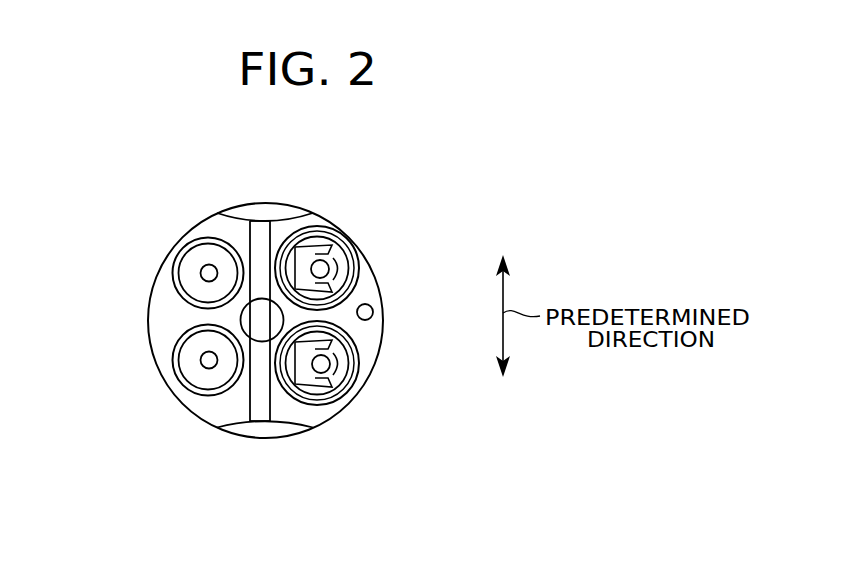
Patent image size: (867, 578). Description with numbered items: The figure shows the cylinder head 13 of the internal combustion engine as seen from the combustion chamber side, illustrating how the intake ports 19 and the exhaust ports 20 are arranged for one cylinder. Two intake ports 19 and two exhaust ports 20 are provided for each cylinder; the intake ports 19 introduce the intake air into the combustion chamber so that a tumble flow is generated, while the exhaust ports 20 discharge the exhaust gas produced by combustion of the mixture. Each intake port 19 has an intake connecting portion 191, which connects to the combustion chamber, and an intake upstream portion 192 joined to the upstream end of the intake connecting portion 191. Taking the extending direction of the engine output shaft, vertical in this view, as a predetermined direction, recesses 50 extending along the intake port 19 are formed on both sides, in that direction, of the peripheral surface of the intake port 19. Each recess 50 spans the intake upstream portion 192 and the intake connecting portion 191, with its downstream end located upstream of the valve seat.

The cylinder head 13 is at (263, 438).
The intake port 19 is at (382, 297).
The exhaust port 20 is at (175, 284).
The recess 50 is at (323, 292).
The intake connecting portion 191 is at (346, 235).
The intake upstream portion 192 is at (338, 256).